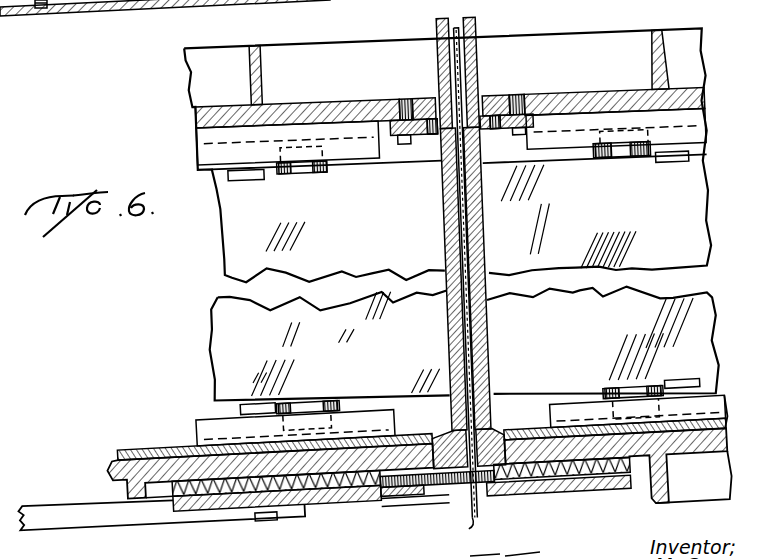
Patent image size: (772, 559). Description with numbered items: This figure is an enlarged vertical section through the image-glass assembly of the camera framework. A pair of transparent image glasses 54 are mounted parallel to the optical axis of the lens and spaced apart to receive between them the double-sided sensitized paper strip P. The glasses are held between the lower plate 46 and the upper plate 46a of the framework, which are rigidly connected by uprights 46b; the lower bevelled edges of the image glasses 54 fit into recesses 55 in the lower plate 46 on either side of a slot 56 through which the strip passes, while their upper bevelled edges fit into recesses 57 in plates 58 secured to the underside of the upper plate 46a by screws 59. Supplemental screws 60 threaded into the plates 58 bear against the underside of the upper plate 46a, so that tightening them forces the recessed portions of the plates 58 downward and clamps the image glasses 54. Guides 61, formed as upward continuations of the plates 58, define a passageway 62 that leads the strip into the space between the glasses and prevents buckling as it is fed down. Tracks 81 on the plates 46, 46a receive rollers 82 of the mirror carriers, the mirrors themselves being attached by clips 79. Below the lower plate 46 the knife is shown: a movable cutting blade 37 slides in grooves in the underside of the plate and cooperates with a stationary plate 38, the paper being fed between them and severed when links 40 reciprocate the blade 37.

The movable cutting blade 37 is at (403, 488).
The stationary plate 38 is at (488, 490).
The links 40 is at (87, 493).
The lower plate 46 is at (176, 448).
The upper plate 46a is at (355, 81).
The uprights 46b is at (586, 355).
The image glasses 54 is at (447, 344).
The recesses 55 is at (440, 436).
The slot 56 is at (437, 487).
The recesses 57 is at (431, 99).
The plates 58 is at (420, 100).
The screws 59 is at (431, 139).
The supplemental screws 60 is at (439, 134).
The guides 61 is at (481, 17).
The passageway 62 is at (469, 72).
The clips 79 is at (252, 173).
The guides or tracks 81 is at (372, 156).
The rollers 82 is at (298, 167).